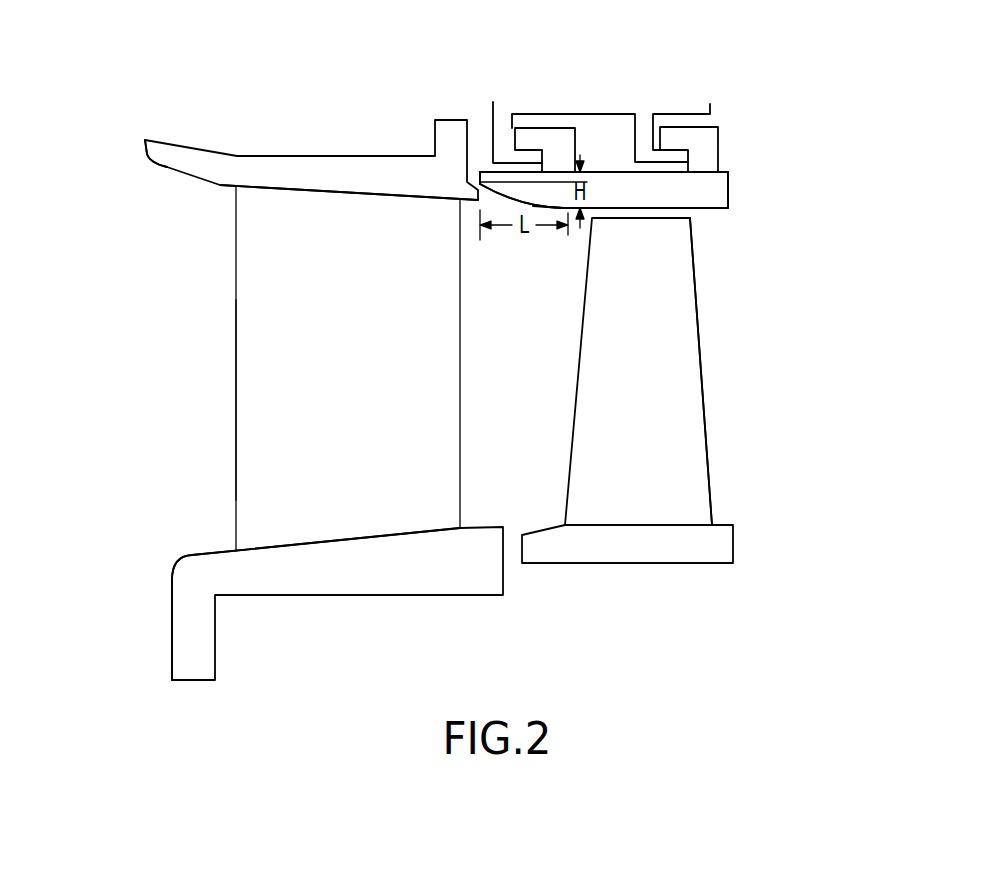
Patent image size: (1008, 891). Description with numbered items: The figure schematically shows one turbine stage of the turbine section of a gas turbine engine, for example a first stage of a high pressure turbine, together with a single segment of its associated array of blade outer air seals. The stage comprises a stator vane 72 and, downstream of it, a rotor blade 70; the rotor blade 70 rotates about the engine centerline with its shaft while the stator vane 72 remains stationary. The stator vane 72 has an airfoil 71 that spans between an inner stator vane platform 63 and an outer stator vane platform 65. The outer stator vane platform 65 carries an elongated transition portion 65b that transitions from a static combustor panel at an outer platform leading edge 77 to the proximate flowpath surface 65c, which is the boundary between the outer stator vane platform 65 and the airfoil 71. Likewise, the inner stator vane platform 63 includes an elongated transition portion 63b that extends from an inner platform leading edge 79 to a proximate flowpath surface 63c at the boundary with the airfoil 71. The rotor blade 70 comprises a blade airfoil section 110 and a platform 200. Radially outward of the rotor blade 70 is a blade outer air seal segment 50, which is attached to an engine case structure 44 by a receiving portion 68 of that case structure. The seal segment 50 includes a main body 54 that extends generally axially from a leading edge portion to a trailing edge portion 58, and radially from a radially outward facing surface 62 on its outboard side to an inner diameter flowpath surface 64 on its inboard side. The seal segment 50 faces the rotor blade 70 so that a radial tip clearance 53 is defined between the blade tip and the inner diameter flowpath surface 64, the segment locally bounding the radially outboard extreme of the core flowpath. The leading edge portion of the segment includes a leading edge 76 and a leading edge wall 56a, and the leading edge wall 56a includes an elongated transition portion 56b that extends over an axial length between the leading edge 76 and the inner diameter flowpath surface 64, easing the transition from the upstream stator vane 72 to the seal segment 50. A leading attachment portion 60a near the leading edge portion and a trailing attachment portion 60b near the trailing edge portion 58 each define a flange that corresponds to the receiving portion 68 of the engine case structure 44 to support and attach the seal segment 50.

The engine case structure 44 is at (712, 108).
The blade outer air seal segment 50 is at (713, 192).
The radial tip clearance 53 is at (697, 215).
The main body 54 is at (620, 203).
The leading edge wall 56a is at (508, 198).
The elongated transition portion 56b is at (533, 207).
The trailing edge portion 58 is at (730, 198).
The leading attachment portion 60a is at (560, 127).
The trailing attachment portion 60b is at (718, 147).
The radially outward facing surface 62 is at (620, 114).
The inner diameter flowpath surface 64 is at (612, 208).
The outer stator vane platform 65 is at (311, 185).
The elongated transition portion 65b is at (173, 168).
The proximate flowpath surface 65c is at (325, 193).
The receiving portion 68 is at (517, 128).
The rotor blade 70 is at (708, 430).
The airfoil 71 is at (335, 396).
The stator vane 72 is at (235, 400).
The leading edge 76 is at (480, 176).
The outer platform leading edge 77 is at (145, 140).
The inner platform leading edge 79 is at (172, 606).
The inner stator vane platform 63 is at (316, 586).
The elongated transition portion 63b is at (193, 556).
The proximate flowpath surface 63c is at (325, 541).
The blade airfoil section 110 is at (621, 386).
The platform 200 is at (733, 552).